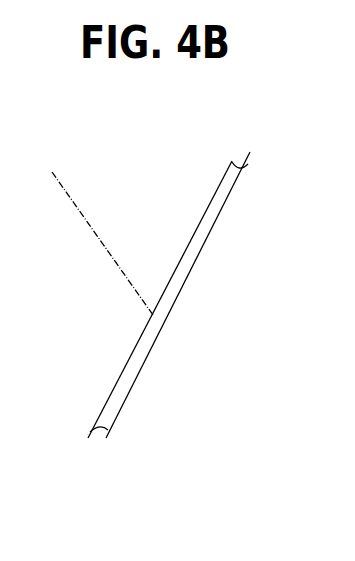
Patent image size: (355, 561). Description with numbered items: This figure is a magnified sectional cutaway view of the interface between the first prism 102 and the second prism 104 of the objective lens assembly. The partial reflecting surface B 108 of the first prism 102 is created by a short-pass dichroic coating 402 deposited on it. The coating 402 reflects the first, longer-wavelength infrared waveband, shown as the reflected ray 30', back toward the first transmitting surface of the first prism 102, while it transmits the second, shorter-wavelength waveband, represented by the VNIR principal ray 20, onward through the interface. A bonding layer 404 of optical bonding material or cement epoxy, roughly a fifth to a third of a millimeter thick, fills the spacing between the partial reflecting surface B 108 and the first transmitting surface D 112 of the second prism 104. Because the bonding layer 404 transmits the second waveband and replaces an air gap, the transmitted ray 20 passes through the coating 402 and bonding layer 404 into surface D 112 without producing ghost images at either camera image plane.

The partial reflecting surface B 108 is at (214, 193).
The short-pass dichroic coating 402 is at (236, 157).
The bonding layer 404 is at (233, 180).
The first transmitting surface D 112 is at (117, 417).
The ray 30' is at (102, 231).
The first prism 102 is at (42, 253).
The second prism 104 is at (255, 443).
The VNIR principal ray 20 is at (263, 305).